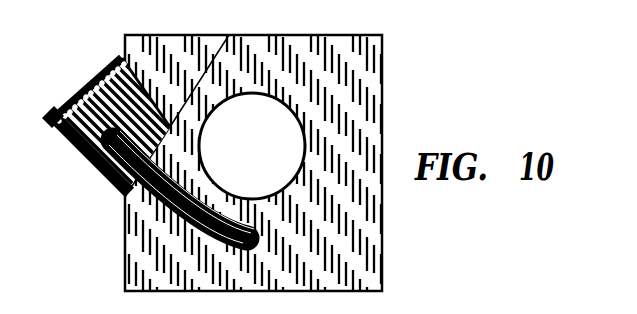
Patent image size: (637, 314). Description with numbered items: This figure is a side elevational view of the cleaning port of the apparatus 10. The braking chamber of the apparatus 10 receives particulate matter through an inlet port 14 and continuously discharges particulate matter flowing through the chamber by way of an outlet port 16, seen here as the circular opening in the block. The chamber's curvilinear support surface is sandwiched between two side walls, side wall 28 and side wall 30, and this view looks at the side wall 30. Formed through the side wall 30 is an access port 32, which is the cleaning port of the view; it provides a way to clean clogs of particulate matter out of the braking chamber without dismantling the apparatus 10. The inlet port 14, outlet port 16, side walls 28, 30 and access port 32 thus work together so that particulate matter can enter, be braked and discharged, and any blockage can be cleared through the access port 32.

The apparatus 10 is at (278, 162).
The inlet port 14 is at (95, 80).
The outlet port 16 is at (287, 123).
The side wall 28 is at (126, 36).
The side wall 30 is at (125, 264).
The access port 32 is at (127, 200).